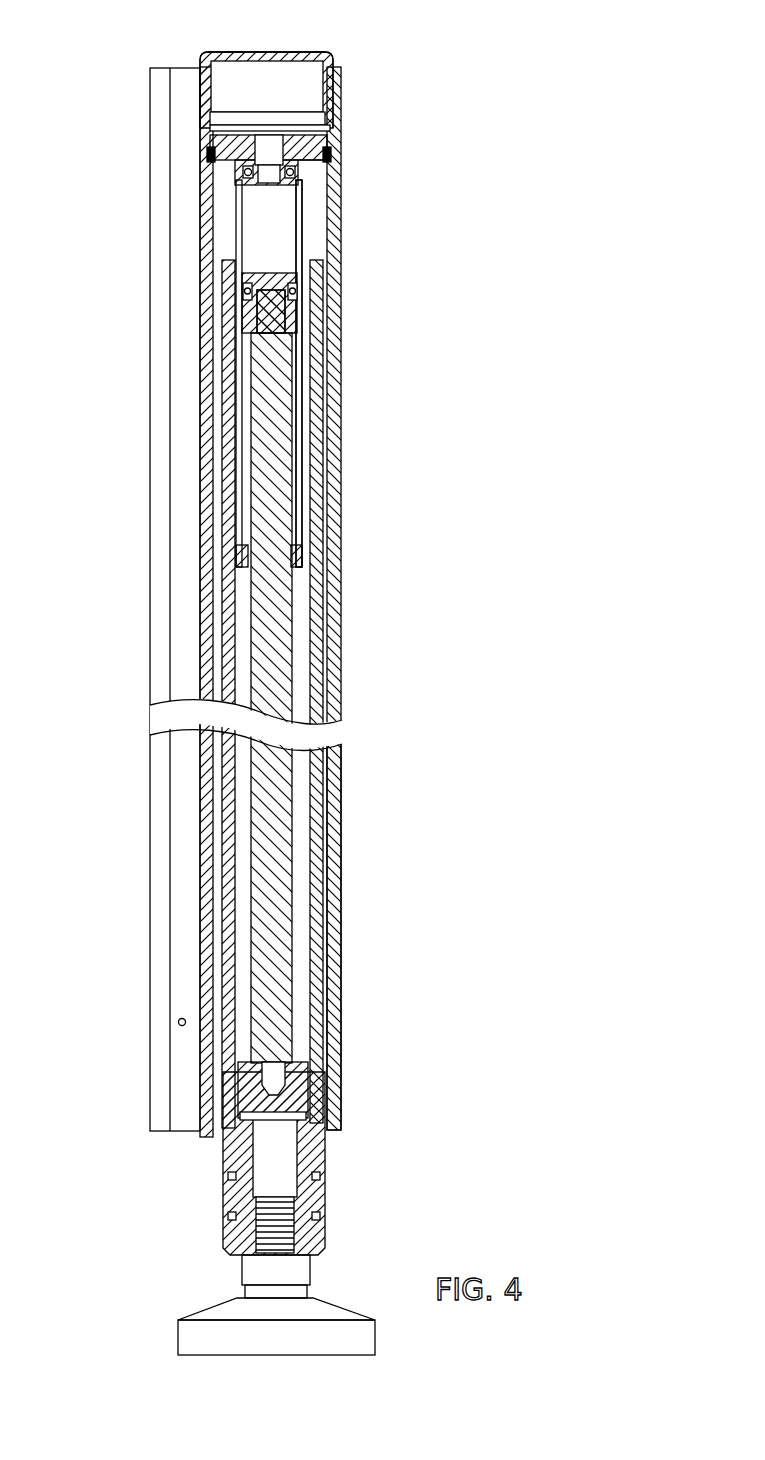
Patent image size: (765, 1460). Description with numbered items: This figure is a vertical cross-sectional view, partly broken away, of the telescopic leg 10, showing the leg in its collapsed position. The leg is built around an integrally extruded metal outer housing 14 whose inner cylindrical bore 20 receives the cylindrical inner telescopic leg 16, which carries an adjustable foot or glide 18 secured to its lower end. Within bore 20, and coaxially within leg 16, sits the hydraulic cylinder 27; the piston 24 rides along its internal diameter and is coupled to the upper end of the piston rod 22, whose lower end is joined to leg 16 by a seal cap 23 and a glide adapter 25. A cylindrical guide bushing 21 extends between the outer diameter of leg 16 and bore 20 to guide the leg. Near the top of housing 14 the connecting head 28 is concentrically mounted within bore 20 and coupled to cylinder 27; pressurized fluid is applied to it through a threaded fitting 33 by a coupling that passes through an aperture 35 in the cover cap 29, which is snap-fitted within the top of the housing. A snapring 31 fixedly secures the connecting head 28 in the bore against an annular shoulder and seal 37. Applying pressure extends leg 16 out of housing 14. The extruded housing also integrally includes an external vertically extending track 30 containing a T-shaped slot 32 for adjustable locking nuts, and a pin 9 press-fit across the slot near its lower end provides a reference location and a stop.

The pin 9 is at (181, 1026).
The telescopic leg 10 is at (493, 137).
The outer housing 14 is at (350, 336).
The inner telescopic leg 16 is at (302, 622).
The adjustable foot or glide 18 is at (213, 1308).
The inner cylindrical bore 20 is at (314, 185).
The cylindrical guide bushing 21 is at (328, 937).
The piston rod 22 is at (297, 845).
The seal cap 23 is at (318, 1062).
The piston 24 is at (301, 266).
The glide adapter 25 is at (245, 1166).
The hydraulic cylinder 27 is at (296, 229).
The connecting head 28 is at (331, 138).
The cover cap 29 is at (300, 52).
The track 30 is at (148, 898).
The snapring 31 is at (332, 125).
The T-shaped slot 32 is at (186, 812).
The threaded fitting 33 is at (264, 135).
The aperture 35 is at (265, 52).
The annular shoulder and seal 37 is at (331, 153).